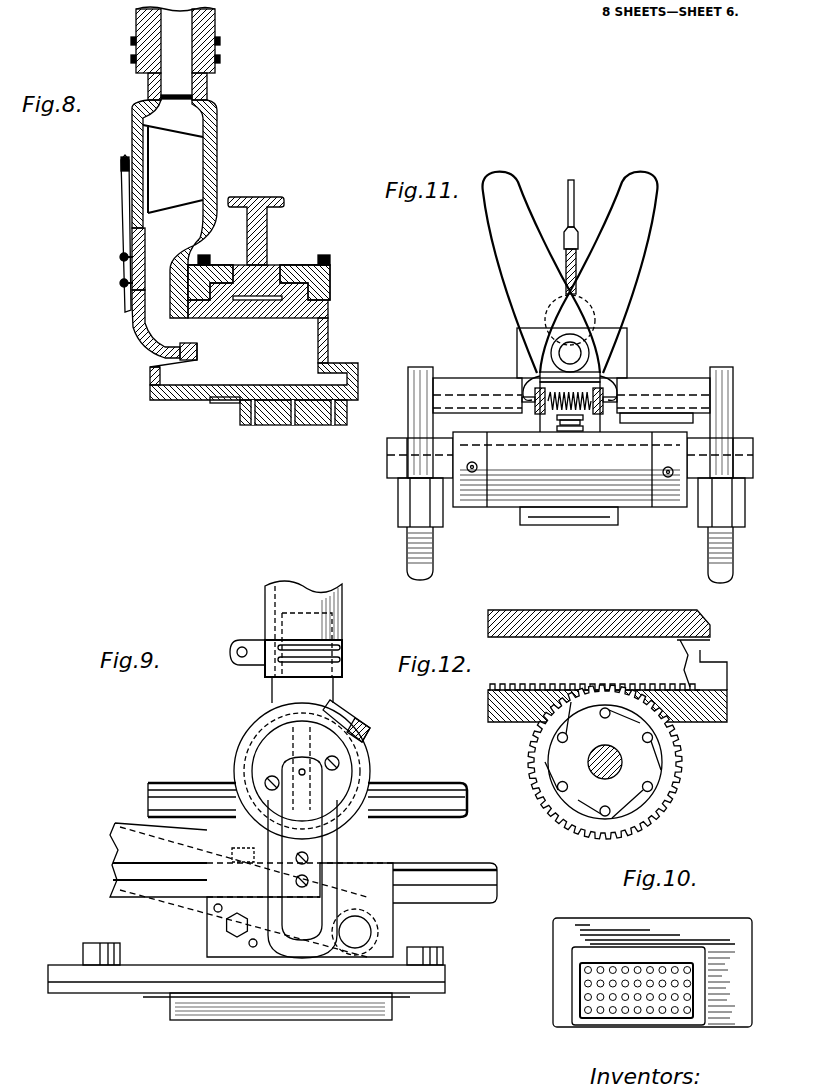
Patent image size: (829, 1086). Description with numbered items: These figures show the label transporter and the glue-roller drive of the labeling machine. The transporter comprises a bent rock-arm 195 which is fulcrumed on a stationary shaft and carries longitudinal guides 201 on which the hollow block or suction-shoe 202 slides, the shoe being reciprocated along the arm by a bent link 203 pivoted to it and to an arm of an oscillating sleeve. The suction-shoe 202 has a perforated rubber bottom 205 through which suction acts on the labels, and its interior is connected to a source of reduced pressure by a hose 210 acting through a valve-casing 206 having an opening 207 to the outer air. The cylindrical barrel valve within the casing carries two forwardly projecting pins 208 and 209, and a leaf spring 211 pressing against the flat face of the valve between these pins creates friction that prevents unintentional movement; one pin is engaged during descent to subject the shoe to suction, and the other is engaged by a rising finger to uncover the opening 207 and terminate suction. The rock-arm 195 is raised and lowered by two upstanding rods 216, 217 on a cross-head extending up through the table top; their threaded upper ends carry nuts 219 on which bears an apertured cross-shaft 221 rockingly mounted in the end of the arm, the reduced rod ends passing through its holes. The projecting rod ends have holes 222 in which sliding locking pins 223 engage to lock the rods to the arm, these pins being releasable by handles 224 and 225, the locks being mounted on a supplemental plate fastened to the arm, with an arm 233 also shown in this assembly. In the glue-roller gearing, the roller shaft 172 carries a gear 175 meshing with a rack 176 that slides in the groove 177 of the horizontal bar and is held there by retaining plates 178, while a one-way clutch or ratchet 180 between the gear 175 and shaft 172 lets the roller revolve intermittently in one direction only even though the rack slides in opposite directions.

In FIG. 12, the glue-roller shaft 172 is at (617, 760).
In FIG. 12, the gear 175 is at (680, 787).
In FIG. 12, the rack 176 is at (538, 687).
In FIG. 12, the groove 177 is at (700, 623).
In FIG. 12, the retaining plates 178 is at (707, 687).
In FIG. 12, the one-way clutch 180 is at (562, 798).
In FIG. 8, the rock-arm 195 is at (270, 198).
In FIG. 11, the rock-arm 195 is at (570, 478).
In FIG. 9, the rock-arm 195 is at (430, 815).
In FIG. 8, the longitudinal guides 201 is at (225, 263).
In FIG. 9, the longitudinal guides 201 is at (425, 888).
In FIG. 8, the suction-shoe 202 is at (330, 313).
In FIG. 9, the suction-shoe 202 is at (375, 890).
In FIG. 9, the bent link 203 is at (110, 853).
In FIG. 8, the perforated rubber bottom 205 is at (277, 413).
In FIG. 9, the perforated rubber bottom 205 is at (327, 1017).
In FIG. 10, the perforated rubber bottom 205 is at (668, 965).
In FIG. 8, the valve-casing 206 is at (217, 118).
In FIG. 9, the valve-casing 206 is at (363, 762).
In FIG. 9, the opening 207 is at (340, 717).
In FIG. 9, the pin 208 is at (268, 778).
In FIG. 9, the pin 209 is at (337, 765).
In FIG. 8, the hose 210 is at (215, 26).
In FIG. 9, the hose 210 is at (290, 597).
In FIG. 8, the leaf spring 211 is at (127, 212).
In FIG. 9, the leaf spring 211 is at (300, 842).
In FIG. 11, the upstanding rod 216 is at (435, 563).
In FIG. 11, the upstanding rod 217 is at (733, 552).
In FIG. 11, the nuts 219 is at (405, 495).
In FIG. 11, the cross-shaft 221 is at (707, 455).
In FIG. 11, the holes 222 is at (423, 392).
In FIG. 11, the locking pins 223 is at (735, 370).
In FIG. 11, the handle 224 is at (523, 230).
In FIG. 11, the handle 225 is at (625, 228).
In FIG. 11, the arm 233 is at (435, 377).